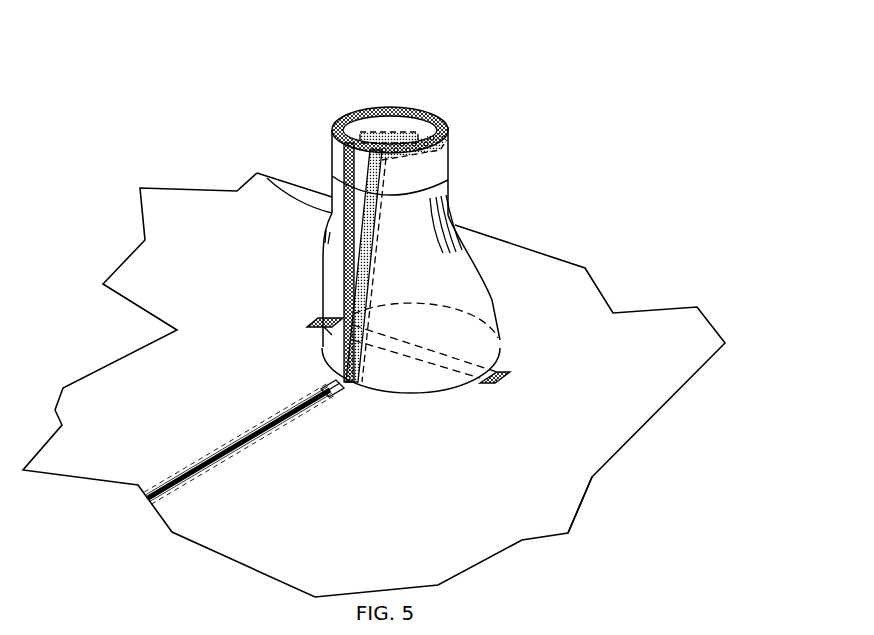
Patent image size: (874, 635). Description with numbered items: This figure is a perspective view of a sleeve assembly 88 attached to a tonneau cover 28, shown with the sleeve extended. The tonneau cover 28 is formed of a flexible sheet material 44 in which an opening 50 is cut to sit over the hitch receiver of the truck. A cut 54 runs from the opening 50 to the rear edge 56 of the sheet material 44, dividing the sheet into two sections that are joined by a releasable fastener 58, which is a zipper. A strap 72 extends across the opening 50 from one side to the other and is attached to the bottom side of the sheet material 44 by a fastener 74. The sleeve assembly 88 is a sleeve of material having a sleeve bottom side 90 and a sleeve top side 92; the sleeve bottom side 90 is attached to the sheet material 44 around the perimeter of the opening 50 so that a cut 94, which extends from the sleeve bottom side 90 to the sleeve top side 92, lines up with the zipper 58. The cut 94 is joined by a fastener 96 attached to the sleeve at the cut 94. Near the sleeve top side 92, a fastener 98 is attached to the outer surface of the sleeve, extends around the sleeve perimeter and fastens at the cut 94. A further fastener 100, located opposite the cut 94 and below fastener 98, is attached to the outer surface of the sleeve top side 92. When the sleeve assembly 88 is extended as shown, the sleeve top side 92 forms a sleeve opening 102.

The tonneau cover 28 is at (728, 313).
The sheet material 44 is at (607, 435).
The opening 50 is at (383, 370).
The cut 54 is at (233, 443).
The rear edge 56 is at (60, 488).
The releasable fastener 58 is at (322, 386).
The strap 72 is at (408, 353).
The fastener 74 is at (308, 322).
The sleeve assembly 88 is at (627, 263).
The sleeve bottom side 90 is at (398, 393).
The sleeve top side 92 is at (448, 146).
The cut 94 is at (448, 183).
The fastener 96 is at (345, 200).
The fastener 98 is at (345, 150).
The fastener 100 is at (403, 131).
The sleeve opening 102 is at (445, 131).